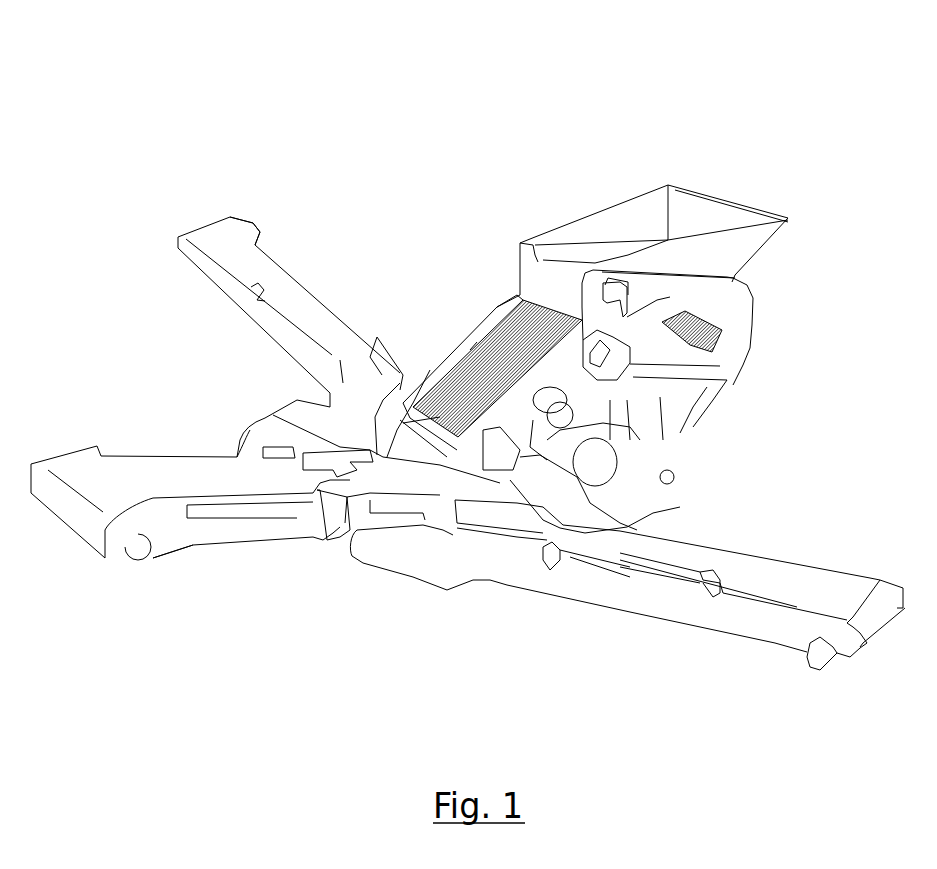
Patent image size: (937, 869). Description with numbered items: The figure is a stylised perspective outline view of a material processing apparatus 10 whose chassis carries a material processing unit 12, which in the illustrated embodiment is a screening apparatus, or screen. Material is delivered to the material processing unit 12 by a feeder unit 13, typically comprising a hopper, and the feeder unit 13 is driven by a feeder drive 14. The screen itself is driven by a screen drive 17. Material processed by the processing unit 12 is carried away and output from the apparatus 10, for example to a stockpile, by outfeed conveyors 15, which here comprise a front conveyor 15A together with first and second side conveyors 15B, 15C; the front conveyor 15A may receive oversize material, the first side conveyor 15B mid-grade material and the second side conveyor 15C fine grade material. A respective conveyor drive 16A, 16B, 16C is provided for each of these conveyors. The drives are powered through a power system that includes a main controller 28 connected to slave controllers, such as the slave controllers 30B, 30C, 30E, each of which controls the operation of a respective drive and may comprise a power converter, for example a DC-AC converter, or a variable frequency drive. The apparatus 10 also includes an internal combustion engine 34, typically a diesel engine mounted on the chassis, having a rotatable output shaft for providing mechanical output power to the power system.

The material processing apparatus 10 is at (783, 92).
The material processing unit 12 is at (520, 318).
The feeder unit 13 is at (695, 218).
The feeder drive 14 is at (532, 288).
The conveyor 15 is at (272, 262).
The front conveyor 15A is at (170, 472).
The first side conveyor 15B is at (283, 322).
The second side conveyor 15C is at (648, 593).
The conveyor drive 16A is at (140, 548).
The conveyor drive 16B is at (257, 230).
The conveyor drive 16C is at (820, 655).
The screen drive 17 is at (572, 396).
The main controller 28 is at (660, 355).
The slave controller 30B is at (520, 425).
The slave controller 30C is at (803, 635).
The slave controller 30E is at (173, 530).
The internal combustion engine 34 is at (705, 380).